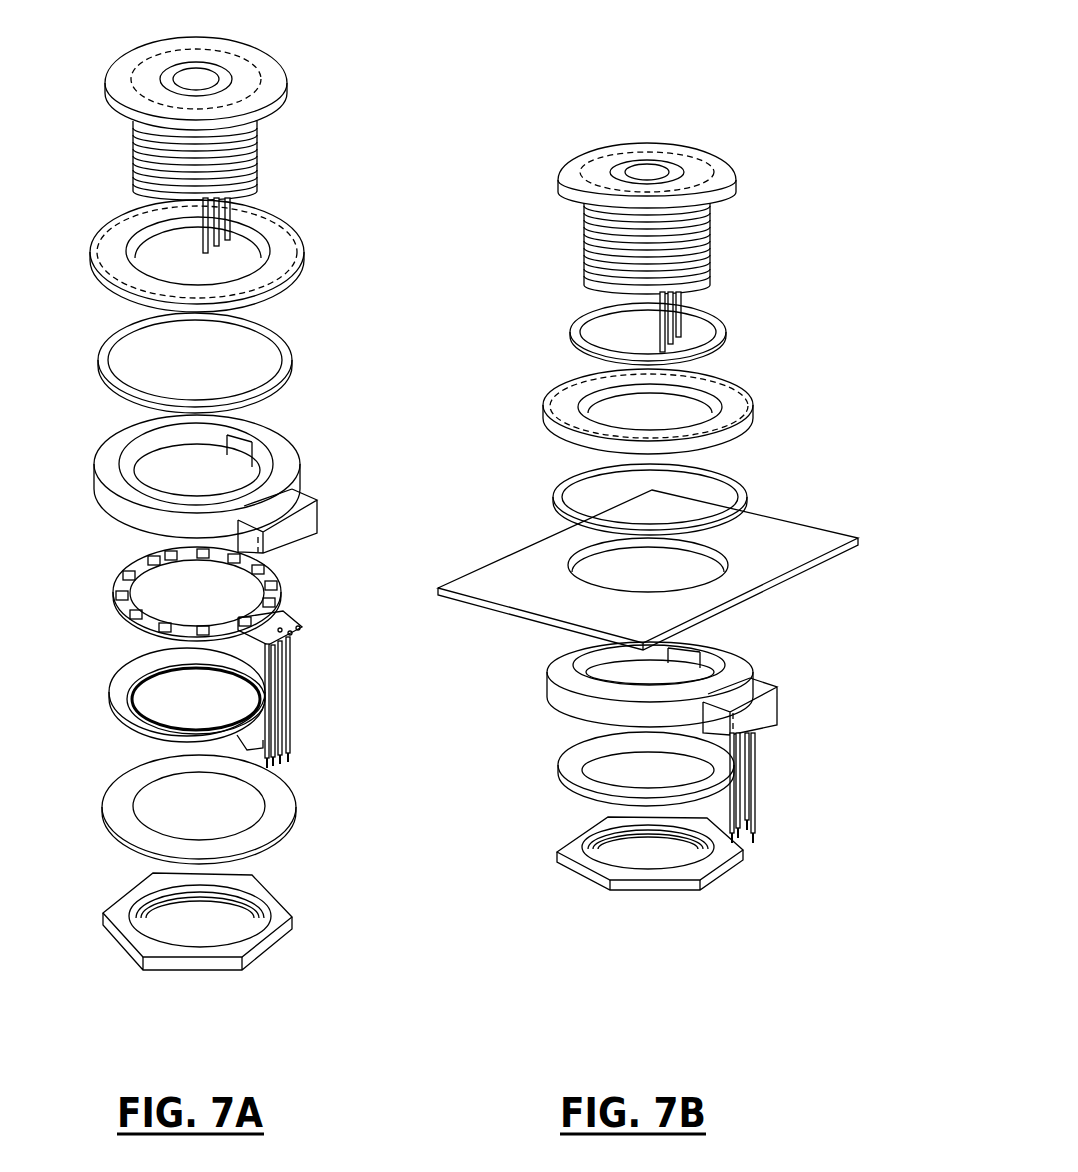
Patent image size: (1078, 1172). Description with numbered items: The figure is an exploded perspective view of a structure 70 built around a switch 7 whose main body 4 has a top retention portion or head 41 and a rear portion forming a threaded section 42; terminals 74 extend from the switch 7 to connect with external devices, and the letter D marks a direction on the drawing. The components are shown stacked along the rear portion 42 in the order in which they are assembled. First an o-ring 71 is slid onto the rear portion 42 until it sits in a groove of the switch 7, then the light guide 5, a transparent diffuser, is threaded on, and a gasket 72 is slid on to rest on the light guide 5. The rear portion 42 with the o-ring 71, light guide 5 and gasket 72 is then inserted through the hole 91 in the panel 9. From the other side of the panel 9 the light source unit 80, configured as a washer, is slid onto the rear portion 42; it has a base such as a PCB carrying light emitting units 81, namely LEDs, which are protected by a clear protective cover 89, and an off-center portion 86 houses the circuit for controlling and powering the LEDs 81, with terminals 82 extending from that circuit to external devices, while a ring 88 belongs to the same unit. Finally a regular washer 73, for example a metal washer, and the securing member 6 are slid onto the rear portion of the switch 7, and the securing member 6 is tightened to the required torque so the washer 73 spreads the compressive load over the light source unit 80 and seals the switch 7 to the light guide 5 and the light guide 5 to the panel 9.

In FIG. 7A, the main body 4 is at (266, 118).
In FIG. 7B, the main body 4 is at (613, 173).
In FIG. 7A, the switch assembly 7 is at (300, 120).
In FIG. 7B, the switch assembly 7 is at (613, 173).
In FIG. 7B, the head 41 is at (718, 166).
In FIG. 7B, the threaded section 42 is at (714, 244).
In FIG. 7A, the terminals 74 is at (238, 198).
In FIG. 7B, the terminals 74 is at (690, 296).
In FIG. 7A, the direction of insertion D is at (140, 192).
In FIG. 7B, the direction of insertion D is at (598, 296).
In FIG. 7A, the light guide 5 is at (312, 252).
In FIG. 7B, the light guide 5 is at (553, 372).
In FIG. 7B, the o-ring 71 is at (724, 345).
In FIG. 7A, the gasket 72 is at (300, 350).
In FIG. 7B, the gasket 72 is at (553, 477).
In FIG. 7A, the protective cover 89 is at (295, 460).
In FIG. 7A, the light source unit 80 is at (85, 412).
In FIG. 7B, the light source unit 80 is at (766, 662).
In FIG. 7A, the light emitting units 81 is at (235, 567).
In FIG. 7A, the LED circuit board 86 is at (266, 596).
In FIG. 7A, the terminals 82 is at (298, 695).
In FIG. 7B, the terminals 82 is at (756, 773).
In FIG. 7A, the light diffuser ring 88 is at (118, 694).
In FIG. 7A, the washer 73 is at (308, 810).
In FIG. 7B, the washer 73 is at (545, 782).
In FIG. 7A, the securing member 6 is at (310, 918).
In FIG. 7B, the securing member 6 is at (547, 867).
In FIG. 7B, the panel 9 is at (648, 519).
In FIG. 7B, the hole 91 is at (700, 567).
In FIG. 7B, the structure 70 is at (692, 78).